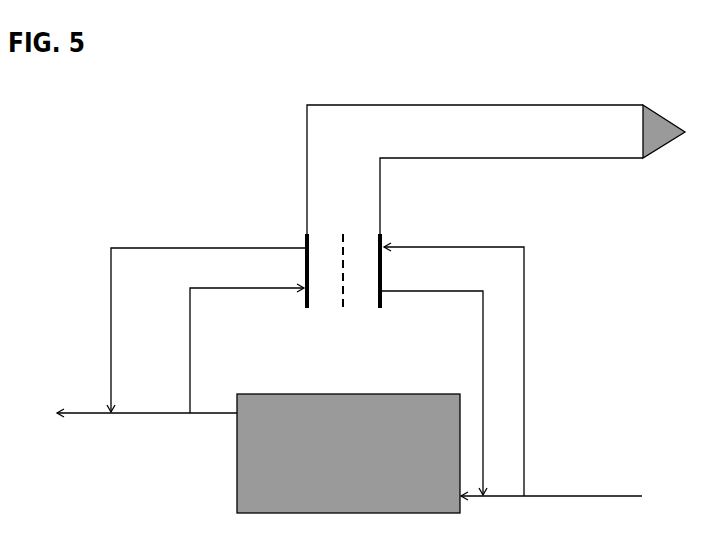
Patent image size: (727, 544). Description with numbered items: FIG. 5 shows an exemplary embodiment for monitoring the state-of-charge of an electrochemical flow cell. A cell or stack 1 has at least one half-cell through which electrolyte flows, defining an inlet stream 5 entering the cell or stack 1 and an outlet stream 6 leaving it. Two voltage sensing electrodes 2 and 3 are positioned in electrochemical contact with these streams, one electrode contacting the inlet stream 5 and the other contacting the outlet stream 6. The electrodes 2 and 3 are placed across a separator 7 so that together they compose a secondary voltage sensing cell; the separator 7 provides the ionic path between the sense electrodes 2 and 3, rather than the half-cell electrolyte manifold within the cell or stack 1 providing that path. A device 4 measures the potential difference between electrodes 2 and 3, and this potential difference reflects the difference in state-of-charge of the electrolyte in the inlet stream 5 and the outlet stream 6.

The cell or stack 1 is at (348, 453).
The voltage sensing electrode 2 is at (383, 291).
The voltage sensing electrode 3 is at (308, 291).
The device 4 is at (496, 169).
The inlet stream 5 is at (512, 388).
The outlet stream 6 is at (181, 349).
The separator 7 is at (342, 245).